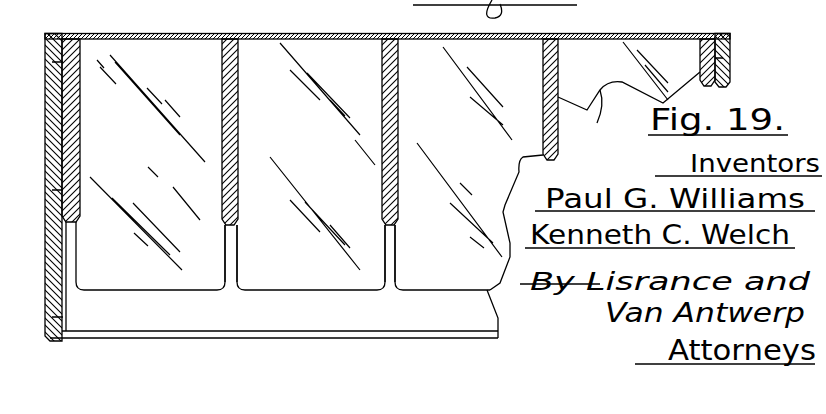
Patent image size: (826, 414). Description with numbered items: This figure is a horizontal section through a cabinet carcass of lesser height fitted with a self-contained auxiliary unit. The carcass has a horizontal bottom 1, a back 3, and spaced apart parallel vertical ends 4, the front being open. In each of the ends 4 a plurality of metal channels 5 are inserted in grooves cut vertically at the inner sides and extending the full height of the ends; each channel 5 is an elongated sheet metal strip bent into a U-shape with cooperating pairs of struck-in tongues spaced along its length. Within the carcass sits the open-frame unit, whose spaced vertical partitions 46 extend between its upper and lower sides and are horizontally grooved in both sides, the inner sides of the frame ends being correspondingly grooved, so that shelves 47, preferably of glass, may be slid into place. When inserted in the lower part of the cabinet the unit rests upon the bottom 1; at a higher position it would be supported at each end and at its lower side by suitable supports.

The horizontal bottom 1 is at (325, 318).
The back 3 is at (312, 34).
The vertical ends 4 is at (49, 102).
The metal channels 5 is at (59, 38).
The divider post 46 is at (382, 122).
The shelves 47 is at (260, 282).